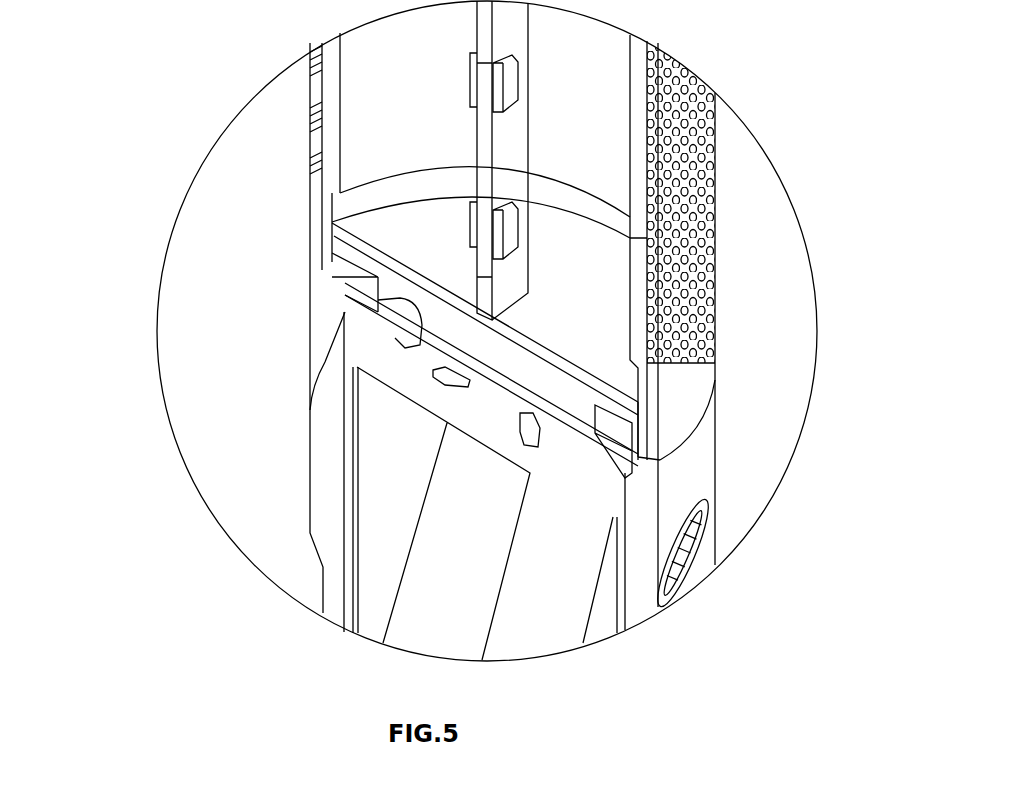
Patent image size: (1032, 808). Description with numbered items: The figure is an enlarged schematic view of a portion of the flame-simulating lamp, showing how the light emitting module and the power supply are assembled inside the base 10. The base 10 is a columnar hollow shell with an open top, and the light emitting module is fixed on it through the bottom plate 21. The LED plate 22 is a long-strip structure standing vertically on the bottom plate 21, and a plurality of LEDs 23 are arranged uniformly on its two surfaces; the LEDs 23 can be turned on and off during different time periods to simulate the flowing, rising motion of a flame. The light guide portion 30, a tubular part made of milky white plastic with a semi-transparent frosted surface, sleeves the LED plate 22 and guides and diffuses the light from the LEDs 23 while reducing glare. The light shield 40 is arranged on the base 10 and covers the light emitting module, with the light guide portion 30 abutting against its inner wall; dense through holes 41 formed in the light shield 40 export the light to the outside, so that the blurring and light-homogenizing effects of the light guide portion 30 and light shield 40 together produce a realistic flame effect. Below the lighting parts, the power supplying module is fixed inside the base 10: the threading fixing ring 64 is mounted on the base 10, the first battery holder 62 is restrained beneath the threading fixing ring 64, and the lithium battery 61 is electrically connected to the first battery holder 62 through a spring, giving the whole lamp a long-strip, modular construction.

The base 10 is at (321, 501).
The bottom plate 21 is at (420, 236).
The LED plate 22 is at (510, 149).
The LED 23 is at (507, 86).
The light guide portion 30 is at (589, 113).
The light shield 40 is at (693, 367).
The through hole 41 is at (683, 200).
The lithium battery 61 is at (475, 557).
The first battery holder 62 is at (500, 365).
The threading fixing ring 64 is at (617, 433).